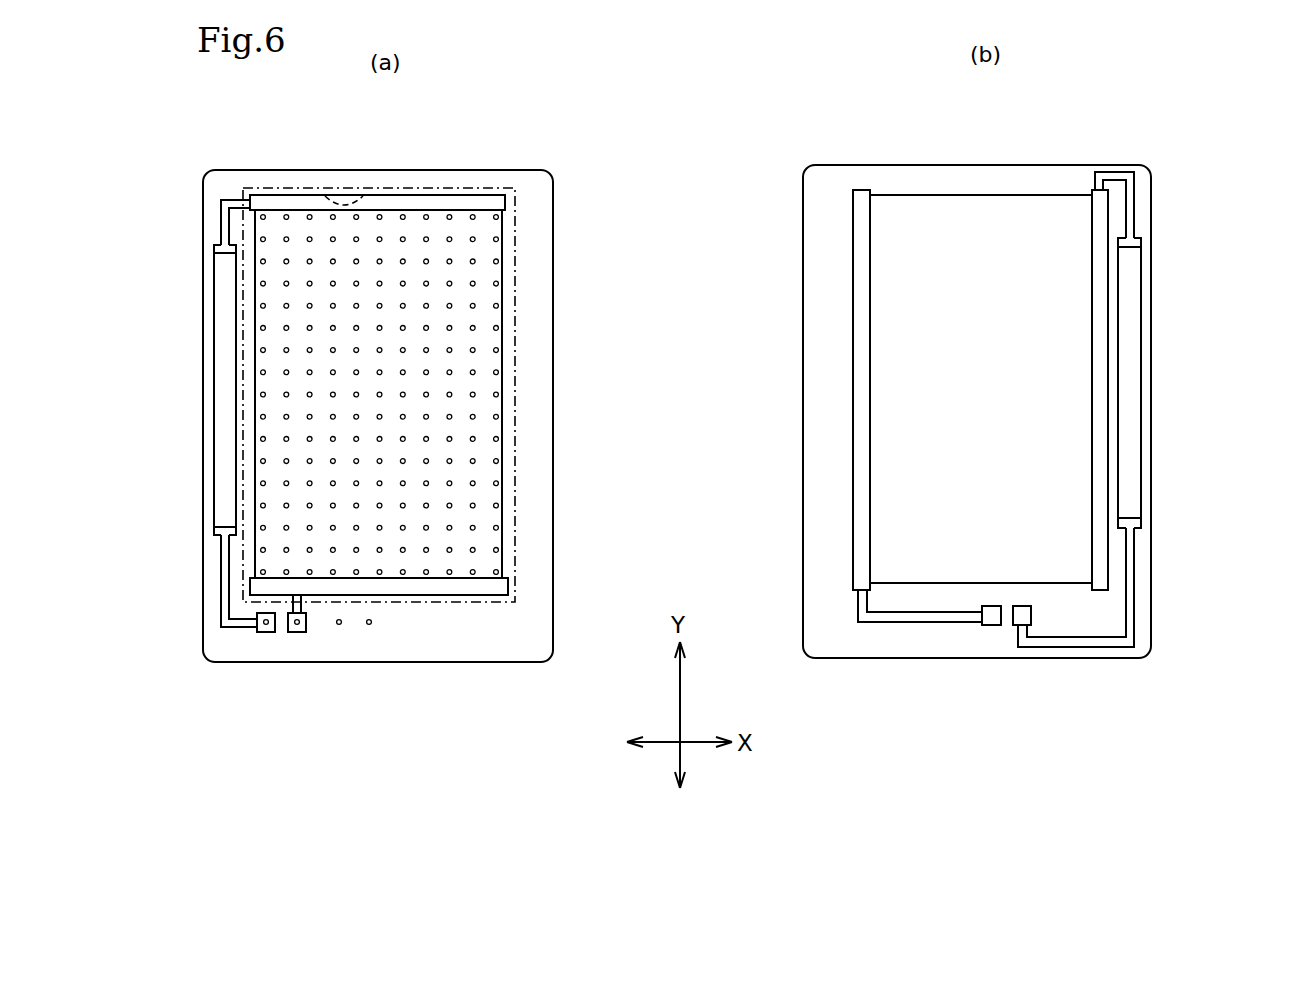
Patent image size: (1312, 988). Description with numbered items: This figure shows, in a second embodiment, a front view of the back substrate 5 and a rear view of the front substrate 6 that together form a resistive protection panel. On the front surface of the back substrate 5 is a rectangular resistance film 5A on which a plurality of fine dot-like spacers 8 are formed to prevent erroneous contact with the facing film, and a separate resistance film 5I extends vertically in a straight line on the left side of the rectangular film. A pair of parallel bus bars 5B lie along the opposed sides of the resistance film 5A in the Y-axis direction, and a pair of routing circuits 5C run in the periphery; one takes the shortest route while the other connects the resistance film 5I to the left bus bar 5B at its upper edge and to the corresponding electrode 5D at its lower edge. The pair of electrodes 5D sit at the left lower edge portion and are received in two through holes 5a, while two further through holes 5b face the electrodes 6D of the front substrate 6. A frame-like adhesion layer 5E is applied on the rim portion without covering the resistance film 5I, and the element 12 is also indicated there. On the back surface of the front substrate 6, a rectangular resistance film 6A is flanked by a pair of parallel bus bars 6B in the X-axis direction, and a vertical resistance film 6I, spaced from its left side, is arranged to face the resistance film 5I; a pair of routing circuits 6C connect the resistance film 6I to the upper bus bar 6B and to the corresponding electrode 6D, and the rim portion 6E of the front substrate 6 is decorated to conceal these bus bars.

The back substrate 5 is at (597, 203).
The resistance film 5A is at (483, 472).
The bus bars 5B is at (427, 202).
The routing circuits 5C is at (225, 552).
The electrodes 5D is at (303, 633).
The adhesion layer 5E is at (320, 190).
The resistance film 5I is at (220, 339).
The through holes 5a is at (258, 615).
The through holes 5b is at (369, 626).
The spacers 8 is at (472, 306).
The electrode 12 is at (165, 390).
The front substrate 6 is at (1185, 243).
The resistance film 6A is at (1078, 317).
The bus bars 6B is at (860, 320).
The routing circuits 6C is at (1053, 640).
The electrodes 6D is at (1017, 606).
The rim portion 6E is at (1147, 490).
The resistance film 6I is at (1132, 413).